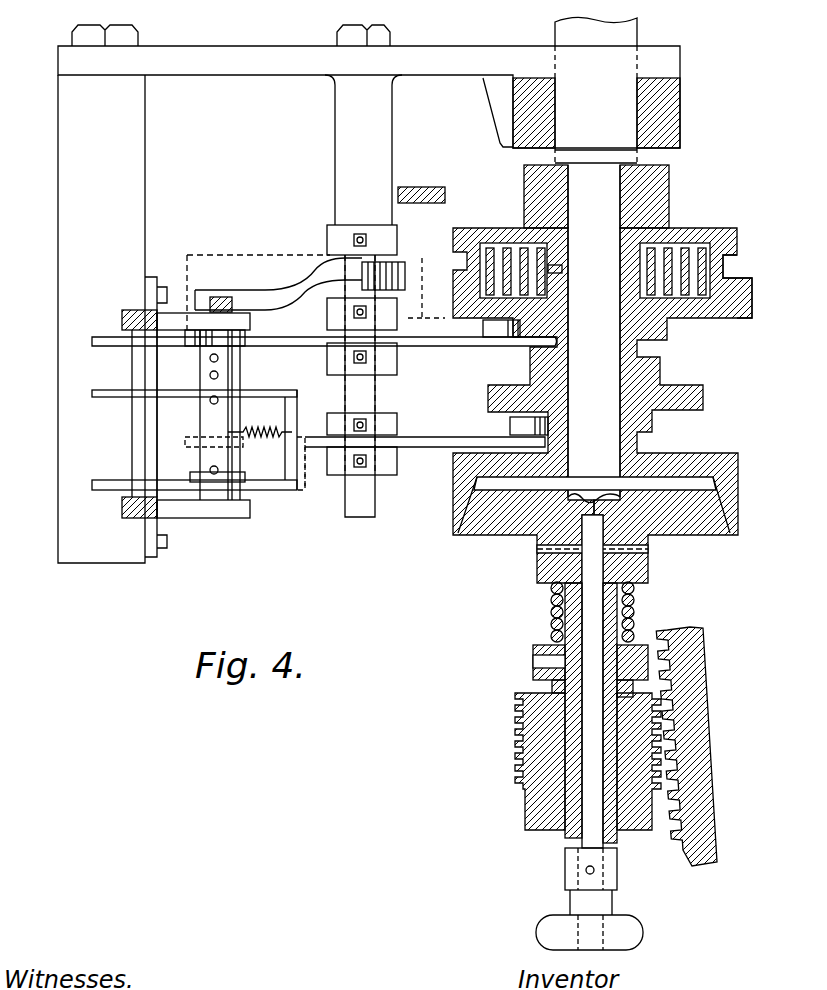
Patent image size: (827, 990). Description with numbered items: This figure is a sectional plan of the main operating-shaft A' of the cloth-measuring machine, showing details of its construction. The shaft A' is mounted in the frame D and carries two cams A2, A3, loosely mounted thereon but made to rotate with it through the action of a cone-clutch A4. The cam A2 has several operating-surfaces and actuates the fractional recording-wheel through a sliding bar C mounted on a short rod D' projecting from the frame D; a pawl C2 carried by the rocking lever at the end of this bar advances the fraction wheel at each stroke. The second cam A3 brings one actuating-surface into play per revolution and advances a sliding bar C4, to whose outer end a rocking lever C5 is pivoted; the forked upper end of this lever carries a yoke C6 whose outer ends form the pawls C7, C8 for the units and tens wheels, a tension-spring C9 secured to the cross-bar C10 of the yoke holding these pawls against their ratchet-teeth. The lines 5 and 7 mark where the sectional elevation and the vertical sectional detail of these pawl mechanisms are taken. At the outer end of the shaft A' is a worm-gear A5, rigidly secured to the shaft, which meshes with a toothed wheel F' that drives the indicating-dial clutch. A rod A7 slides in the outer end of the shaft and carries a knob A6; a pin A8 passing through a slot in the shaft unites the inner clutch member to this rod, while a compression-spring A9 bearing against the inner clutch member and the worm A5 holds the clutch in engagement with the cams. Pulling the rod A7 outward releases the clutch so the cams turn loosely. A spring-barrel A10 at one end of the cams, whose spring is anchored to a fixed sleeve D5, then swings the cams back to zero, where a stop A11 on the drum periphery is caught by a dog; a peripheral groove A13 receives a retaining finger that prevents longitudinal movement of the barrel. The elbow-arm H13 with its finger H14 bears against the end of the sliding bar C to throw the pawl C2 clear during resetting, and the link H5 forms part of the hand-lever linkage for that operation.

The frame D is at (565, 113).
The short rod D' is at (348, 296).
The second link H5 is at (436, 186).
The main operating-shaft A' is at (596, 259).
The fixed sleeve D5 is at (673, 198).
The peripheral groove A13 is at (462, 262).
The cam A3 is at (653, 426).
The spring-barrel A10 is at (733, 268).
The stop A11 is at (741, 303).
The elbow-arm H13 is at (414, 288).
The finger H14 is at (274, 292).
The pawl C2 is at (126, 345).
The sliding bar C is at (437, 347).
The cam A2 is at (520, 350).
The rocking lever C5 is at (212, 418).
The pawl C7 is at (110, 398).
The yoke C6 is at (263, 395).
The pawl C8 is at (110, 487).
The tension-spring C9 is at (266, 432).
The cross-bar C10 is at (298, 421).
The sliding bar C4 is at (436, 440).
The section line 7 7 is at (88, 330).
The section line 5 5 is at (100, 490).
The cone-clutch A4 is at (453, 513).
The rod A7 is at (583, 830).
The pin A8 is at (537, 560).
The compression-spring A9 is at (550, 616).
The worm-gear A5 is at (514, 760).
The toothed wheel F' is at (692, 746).
The knob A6 is at (552, 930).